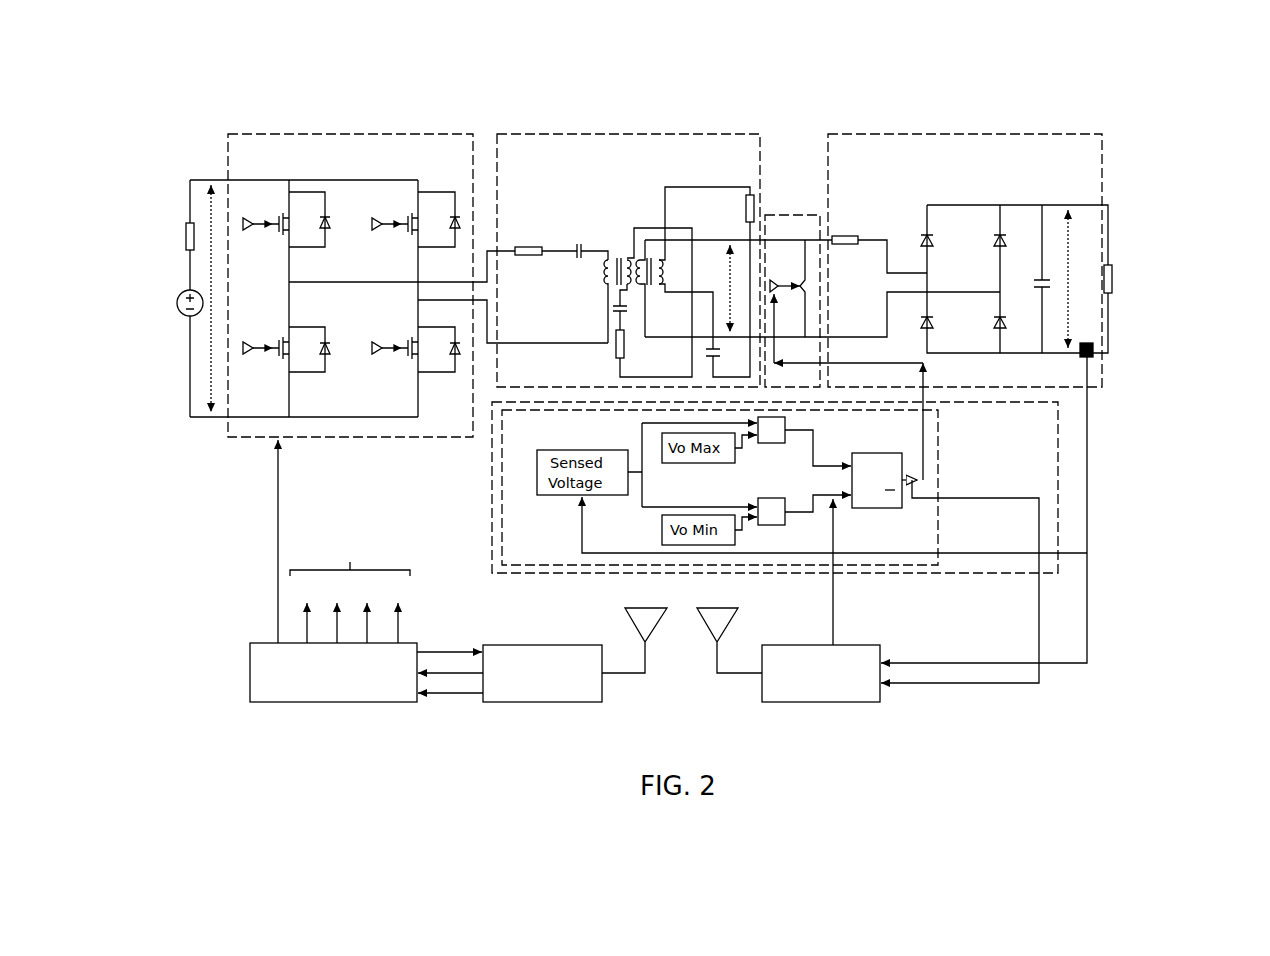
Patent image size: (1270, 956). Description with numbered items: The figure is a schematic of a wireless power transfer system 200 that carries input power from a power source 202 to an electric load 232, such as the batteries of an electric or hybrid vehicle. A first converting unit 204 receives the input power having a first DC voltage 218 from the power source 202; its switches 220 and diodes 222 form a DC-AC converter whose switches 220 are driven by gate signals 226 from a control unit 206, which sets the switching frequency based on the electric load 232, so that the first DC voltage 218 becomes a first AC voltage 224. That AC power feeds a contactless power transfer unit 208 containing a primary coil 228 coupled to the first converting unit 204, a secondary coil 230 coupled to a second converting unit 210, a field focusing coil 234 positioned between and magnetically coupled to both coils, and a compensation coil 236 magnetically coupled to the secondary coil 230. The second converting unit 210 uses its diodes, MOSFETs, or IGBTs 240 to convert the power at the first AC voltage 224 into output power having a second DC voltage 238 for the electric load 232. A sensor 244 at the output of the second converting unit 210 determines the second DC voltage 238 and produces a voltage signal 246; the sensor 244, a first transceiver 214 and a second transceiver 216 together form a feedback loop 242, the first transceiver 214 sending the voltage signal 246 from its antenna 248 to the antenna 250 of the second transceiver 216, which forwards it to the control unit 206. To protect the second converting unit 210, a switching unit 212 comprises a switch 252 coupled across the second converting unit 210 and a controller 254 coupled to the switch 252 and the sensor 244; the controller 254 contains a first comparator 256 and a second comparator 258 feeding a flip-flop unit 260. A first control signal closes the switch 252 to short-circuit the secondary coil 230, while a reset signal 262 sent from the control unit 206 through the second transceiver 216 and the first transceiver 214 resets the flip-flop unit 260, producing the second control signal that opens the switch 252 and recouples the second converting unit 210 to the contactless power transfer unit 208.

The wireless power transfer system 200 is at (1165, 105).
The power source 202 is at (177, 300).
The first converting unit 204 is at (352, 133).
The control unit 206 is at (249, 673).
The contactless power transfer unit 208 is at (630, 133).
The second converting unit 210 is at (968, 133).
The switching unit 212 is at (783, 213).
The first transceiver 214 is at (822, 703).
The second transceiver 216 is at (542, 703).
The first DC voltage 218 is at (210, 357).
The switches 220 is at (282, 232).
The diodes 222 is at (328, 229).
The first AC voltage 224 is at (727, 295).
The gate signals 226 is at (350, 591).
The primary coil 228 is at (603, 275).
The secondary coil 230 is at (638, 258).
The electric load 232 is at (1113, 278).
The field focusing coil 234 is at (612, 295).
The compensation coil 236 is at (665, 275).
The second DC voltage 238 is at (1066, 233).
The diodes, MOSFETs, or IGBTs 240 is at (993, 242).
The feedback loop 242 is at (1128, 638).
The sensor 244 is at (1094, 340).
The voltage signal 246 is at (473, 675).
The antenna 248 is at (718, 607).
The antenna 250 is at (643, 607).
The switch 252 is at (792, 283).
The controller 254 is at (938, 533).
The first comparator 256 is at (790, 415).
The second comparator 258 is at (788, 505).
The flip-flop unit 260 is at (870, 452).
The reset signal 262 is at (460, 648).